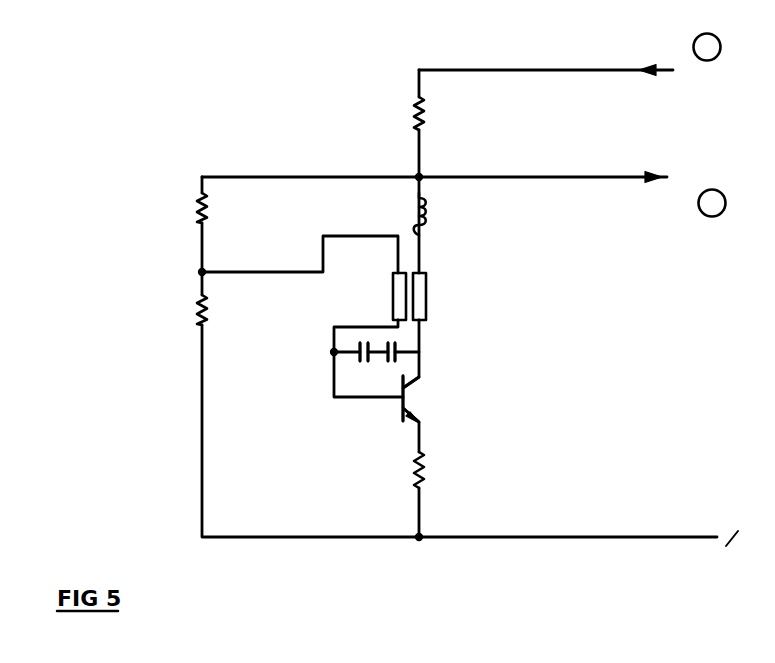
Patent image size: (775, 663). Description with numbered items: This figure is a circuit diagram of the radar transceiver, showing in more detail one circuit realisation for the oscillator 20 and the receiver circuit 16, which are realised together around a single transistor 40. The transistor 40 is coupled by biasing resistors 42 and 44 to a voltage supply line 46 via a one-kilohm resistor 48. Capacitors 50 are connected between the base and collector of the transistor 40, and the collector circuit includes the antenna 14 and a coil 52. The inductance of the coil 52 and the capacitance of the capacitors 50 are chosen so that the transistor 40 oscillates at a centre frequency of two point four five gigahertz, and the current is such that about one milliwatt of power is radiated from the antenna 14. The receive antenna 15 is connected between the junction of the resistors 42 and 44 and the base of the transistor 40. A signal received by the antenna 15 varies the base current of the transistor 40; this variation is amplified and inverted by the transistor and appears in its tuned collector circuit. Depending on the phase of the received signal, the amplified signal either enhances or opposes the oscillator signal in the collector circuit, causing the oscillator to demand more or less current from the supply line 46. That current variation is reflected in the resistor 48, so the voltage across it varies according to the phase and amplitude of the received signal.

The receiver circuit 16 is at (427, 287).
The oscillator 20 is at (186, 118).
The voltage supply line 46 is at (558, 70).
The resistor 48 is at (417, 131).
The coil 52 is at (416, 214).
The biasing resistor 44 is at (200, 223).
The biasing resistor 42 is at (200, 323).
The antenna 14 is at (426, 313).
The receive antenna 15 is at (405, 320).
The capacitors 50 is at (381, 355).
The transistor 40 is at (400, 406).